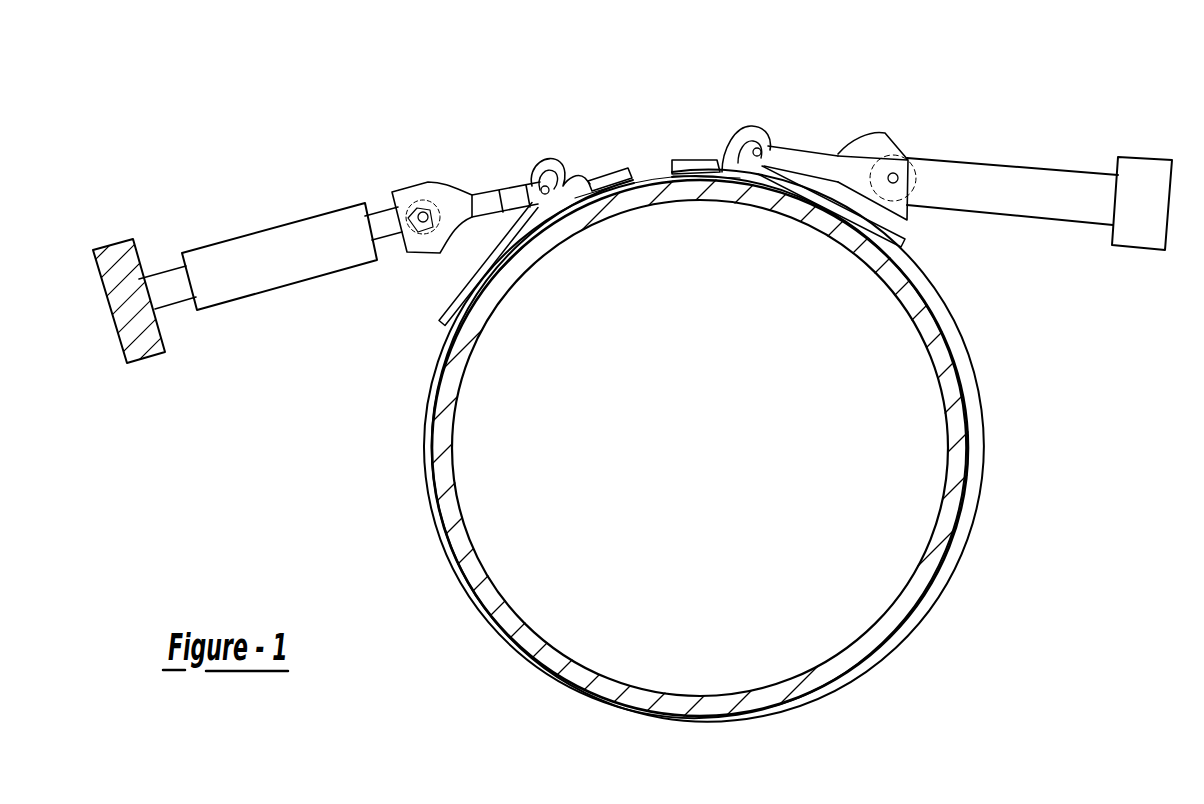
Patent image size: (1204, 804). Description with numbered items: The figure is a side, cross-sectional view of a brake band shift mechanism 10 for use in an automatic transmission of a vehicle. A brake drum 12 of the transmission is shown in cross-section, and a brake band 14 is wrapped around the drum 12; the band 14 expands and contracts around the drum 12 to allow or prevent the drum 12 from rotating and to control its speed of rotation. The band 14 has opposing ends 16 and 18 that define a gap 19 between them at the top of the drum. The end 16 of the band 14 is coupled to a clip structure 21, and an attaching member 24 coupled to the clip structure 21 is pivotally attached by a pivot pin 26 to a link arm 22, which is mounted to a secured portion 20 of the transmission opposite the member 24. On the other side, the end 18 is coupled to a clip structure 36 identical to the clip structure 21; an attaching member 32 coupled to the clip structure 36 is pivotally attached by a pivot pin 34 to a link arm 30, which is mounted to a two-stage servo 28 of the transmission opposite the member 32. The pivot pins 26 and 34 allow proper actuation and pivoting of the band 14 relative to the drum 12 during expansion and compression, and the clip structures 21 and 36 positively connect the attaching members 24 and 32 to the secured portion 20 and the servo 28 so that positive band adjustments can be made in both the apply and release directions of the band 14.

The brake band shift mechanism 10 is at (437, 94).
The brake drum 12 is at (902, 607).
The brake band 14 is at (950, 580).
The end 16 is at (633, 172).
The end 18 is at (667, 165).
The gap 19 is at (654, 166).
The secured portion 20 is at (140, 250).
The clip structure 21 is at (576, 171).
The link arm 22 is at (265, 250).
The attaching member 24 is at (489, 200).
The pivot pin 26 is at (423, 212).
The two-stage servo 28 is at (1132, 242).
The link arm 30 is at (1000, 192).
The attaching member 32 is at (793, 163).
The pivot pin 34 is at (897, 178).
The clip structure 36 is at (755, 117).